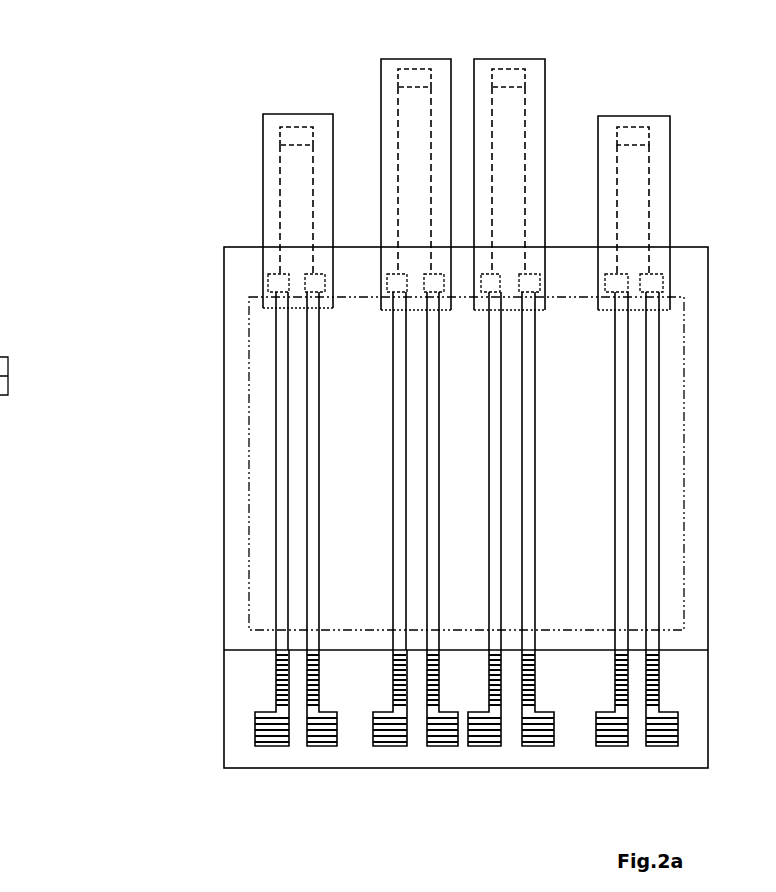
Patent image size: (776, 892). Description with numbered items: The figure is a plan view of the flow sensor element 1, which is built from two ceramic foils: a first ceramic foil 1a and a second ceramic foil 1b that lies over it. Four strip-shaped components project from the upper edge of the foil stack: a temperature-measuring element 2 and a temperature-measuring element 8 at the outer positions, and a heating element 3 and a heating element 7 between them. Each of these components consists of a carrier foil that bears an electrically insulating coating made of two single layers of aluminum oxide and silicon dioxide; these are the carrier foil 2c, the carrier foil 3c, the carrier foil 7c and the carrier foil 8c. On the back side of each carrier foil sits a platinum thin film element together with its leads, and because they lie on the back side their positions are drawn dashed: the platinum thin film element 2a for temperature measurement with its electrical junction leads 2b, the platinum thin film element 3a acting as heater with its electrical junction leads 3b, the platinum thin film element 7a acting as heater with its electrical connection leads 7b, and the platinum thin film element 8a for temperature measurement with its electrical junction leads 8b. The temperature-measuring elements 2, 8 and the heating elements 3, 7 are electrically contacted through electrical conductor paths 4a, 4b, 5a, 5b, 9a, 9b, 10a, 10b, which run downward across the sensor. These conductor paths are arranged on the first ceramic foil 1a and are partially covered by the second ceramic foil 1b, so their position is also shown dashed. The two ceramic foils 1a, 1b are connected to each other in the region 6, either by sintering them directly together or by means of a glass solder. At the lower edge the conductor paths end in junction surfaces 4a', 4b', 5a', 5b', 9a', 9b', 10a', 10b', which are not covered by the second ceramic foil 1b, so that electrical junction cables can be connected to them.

The flow sensor element 1 is at (223, 272).
The first ceramic foil 1a is at (243, 690).
The second ceramic foil 1b is at (238, 584).
The temperature-measuring element 2 is at (262, 150).
The platinum thin film element 2a is at (297, 137).
The electrical junction leads 2b is at (312, 223).
The carrier foil 2c is at (270, 225).
The heating element 3 is at (379, 97).
The platinum thin film element 3a is at (415, 77).
The electrical junction leads 3b is at (428, 207).
The carrier foil 3c is at (389, 229).
The electrical conductor path 4a is at (230, 462).
The electrical conductor path 4b is at (248, 462).
The electrical conductor path 5a is at (289, 462).
The electrical conductor path 5b is at (306, 462).
The region 6 is at (248, 495).
The heating element 7 is at (547, 97).
The platinum thin film element 7a is at (510, 78).
The electrical connection leads 7b is at (492, 220).
The carrier foil 7c is at (535, 230).
The temperature-measuring element 8 is at (670, 155).
The platinum thin film element 8a is at (635, 130).
The electrical junction leads 8b is at (617, 233).
The carrier foil 8c is at (662, 233).
The electrical conductor path 9a is at (623, 462).
The electrical conductor path 9b is at (643, 462).
The electrical conductor path 10a is at (690, 462).
The electrical conductor path 10b is at (708, 462).
The junction surface 4a' is at (259, 738).
The junction surface 4b' is at (310, 738).
The junction surface 5a' is at (384, 738).
The junction surface 5b' is at (435, 738).
The junction surface 9a' is at (481, 738).
The junction surface 9b' is at (531, 738).
The junction surface 10a' is at (598, 738).
The junction surface 10b' is at (661, 738).